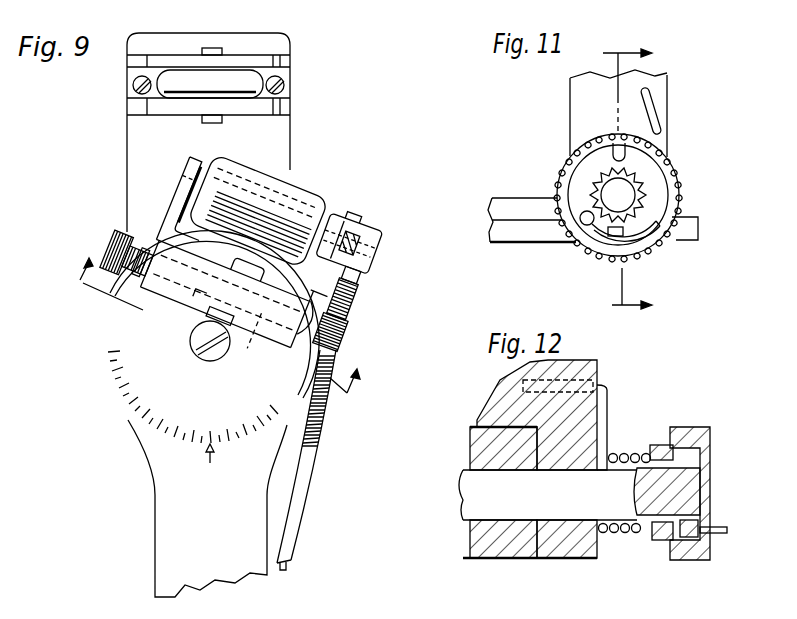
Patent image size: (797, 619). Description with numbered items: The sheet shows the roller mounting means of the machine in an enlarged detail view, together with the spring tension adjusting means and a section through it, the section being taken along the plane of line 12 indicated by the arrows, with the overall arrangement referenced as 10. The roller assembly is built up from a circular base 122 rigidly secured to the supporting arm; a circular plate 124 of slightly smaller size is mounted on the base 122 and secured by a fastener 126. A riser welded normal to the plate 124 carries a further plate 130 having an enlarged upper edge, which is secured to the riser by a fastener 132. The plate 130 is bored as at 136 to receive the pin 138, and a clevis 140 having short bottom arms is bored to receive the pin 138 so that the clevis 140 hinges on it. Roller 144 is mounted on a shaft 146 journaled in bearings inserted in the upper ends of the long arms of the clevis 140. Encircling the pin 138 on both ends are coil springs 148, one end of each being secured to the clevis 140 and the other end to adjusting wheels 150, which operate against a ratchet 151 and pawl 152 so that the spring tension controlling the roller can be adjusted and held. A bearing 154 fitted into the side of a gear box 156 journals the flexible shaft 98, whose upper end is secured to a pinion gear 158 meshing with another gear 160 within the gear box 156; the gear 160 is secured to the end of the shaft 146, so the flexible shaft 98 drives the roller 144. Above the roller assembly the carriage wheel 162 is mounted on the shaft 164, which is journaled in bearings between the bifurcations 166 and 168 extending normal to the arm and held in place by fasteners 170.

In FIG. 9, the section line 10- 10 is at (211, 340).
In FIG. 11, the line 12— 12 is at (614, 179).
In FIG. 9, the flexible shaft 98 is at (308, 478).
In FIG. 9, the circular base 122 is at (112, 393).
In FIG. 9, the circular plate 124 is at (245, 447).
In FIG. 9, the fastener 126 is at (209, 353).
In FIG. 9, the plate 130 is at (263, 313).
In FIG. 12, the plate 130 is at (515, 548).
In FIG. 9, the fastener 132 is at (200, 326).
In FIG. 9, the bore 136 is at (224, 332).
In FIG. 9, the pin 138 is at (338, 338).
In FIG. 12, the pin 138 is at (548, 495).
In FIG. 9, the clevis 140 is at (340, 308).
In FIG. 12, the clevis 140 is at (585, 417).
In FIG. 9, the roller 144 is at (292, 198).
In FIG. 9, the shaft 146 is at (285, 174).
In FIG. 9, the coil springs 148 is at (138, 253).
In FIG. 11, the coil springs 148 is at (657, 116).
In FIG. 12, the coil springs 148 is at (625, 452).
In FIG. 9, the adjusting wheels 150 is at (112, 234).
In FIG. 12, the adjusting wheels 150 is at (710, 433).
In FIG. 11, the ratchet 151 is at (627, 200).
In FIG. 11, the pawl 152 is at (598, 229).
In FIG. 9, the bearing 154 is at (349, 285).
In FIG. 9, the gear box 156 is at (371, 259).
In FIG. 9, the pinion gear 158 is at (382, 236).
In FIG. 9, the gear 160 is at (358, 222).
In FIG. 9, the carriage wheel 162 is at (250, 87).
In FIG. 9, the shaft 164 is at (217, 46).
In FIG. 9, the bifurcation 166 is at (185, 62).
In FIG. 9, the bifurcation 168 is at (158, 103).
In FIG. 9, the fasteners 170 is at (134, 86).